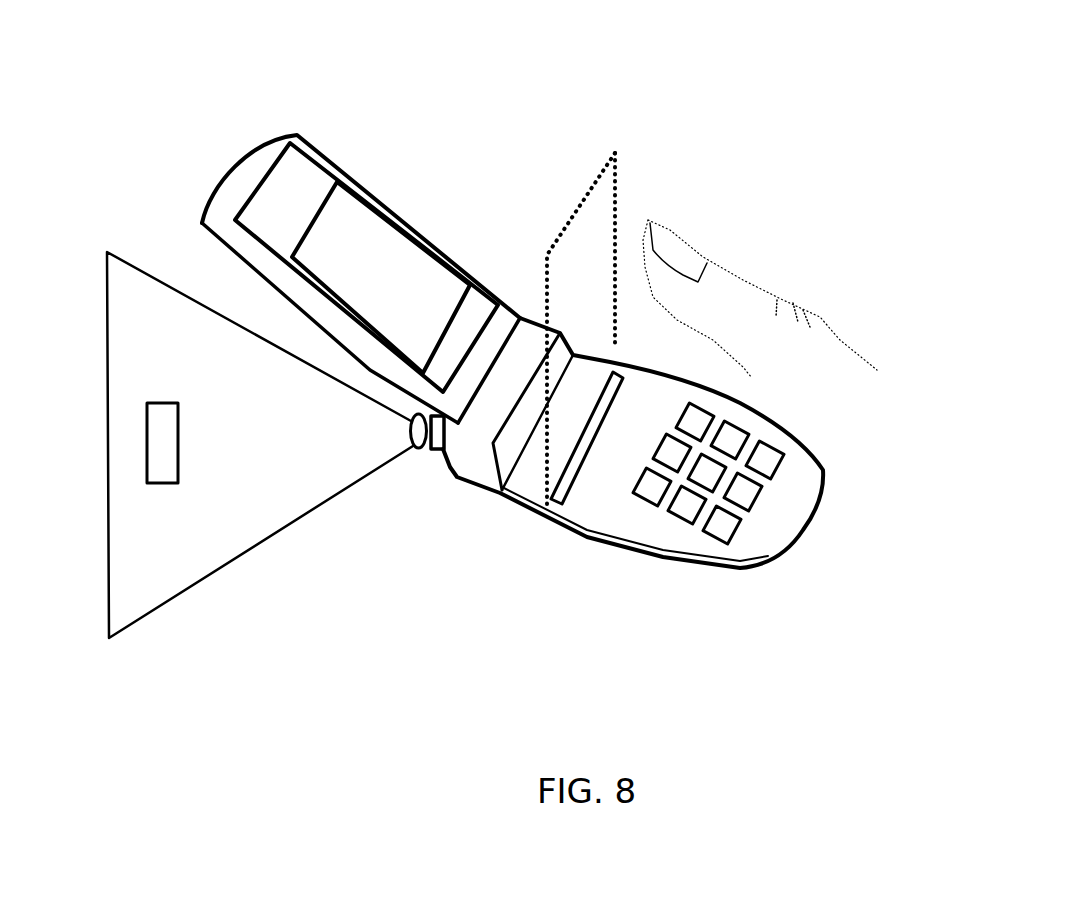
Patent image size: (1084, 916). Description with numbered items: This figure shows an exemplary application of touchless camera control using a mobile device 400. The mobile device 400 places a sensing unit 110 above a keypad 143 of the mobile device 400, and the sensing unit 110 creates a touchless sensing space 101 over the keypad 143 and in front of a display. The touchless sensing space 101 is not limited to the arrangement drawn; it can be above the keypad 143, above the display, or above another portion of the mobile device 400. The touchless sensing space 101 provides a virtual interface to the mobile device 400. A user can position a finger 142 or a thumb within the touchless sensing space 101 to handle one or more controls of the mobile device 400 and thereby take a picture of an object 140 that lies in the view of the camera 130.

The mobile device 400 is at (840, 45).
The touchless sensing space 101 is at (615, 207).
The sensing unit 110 is at (583, 460).
The camera 130 is at (418, 457).
The object 140 is at (162, 403).
The finger 142 is at (842, 342).
The keypad 143 is at (725, 542).